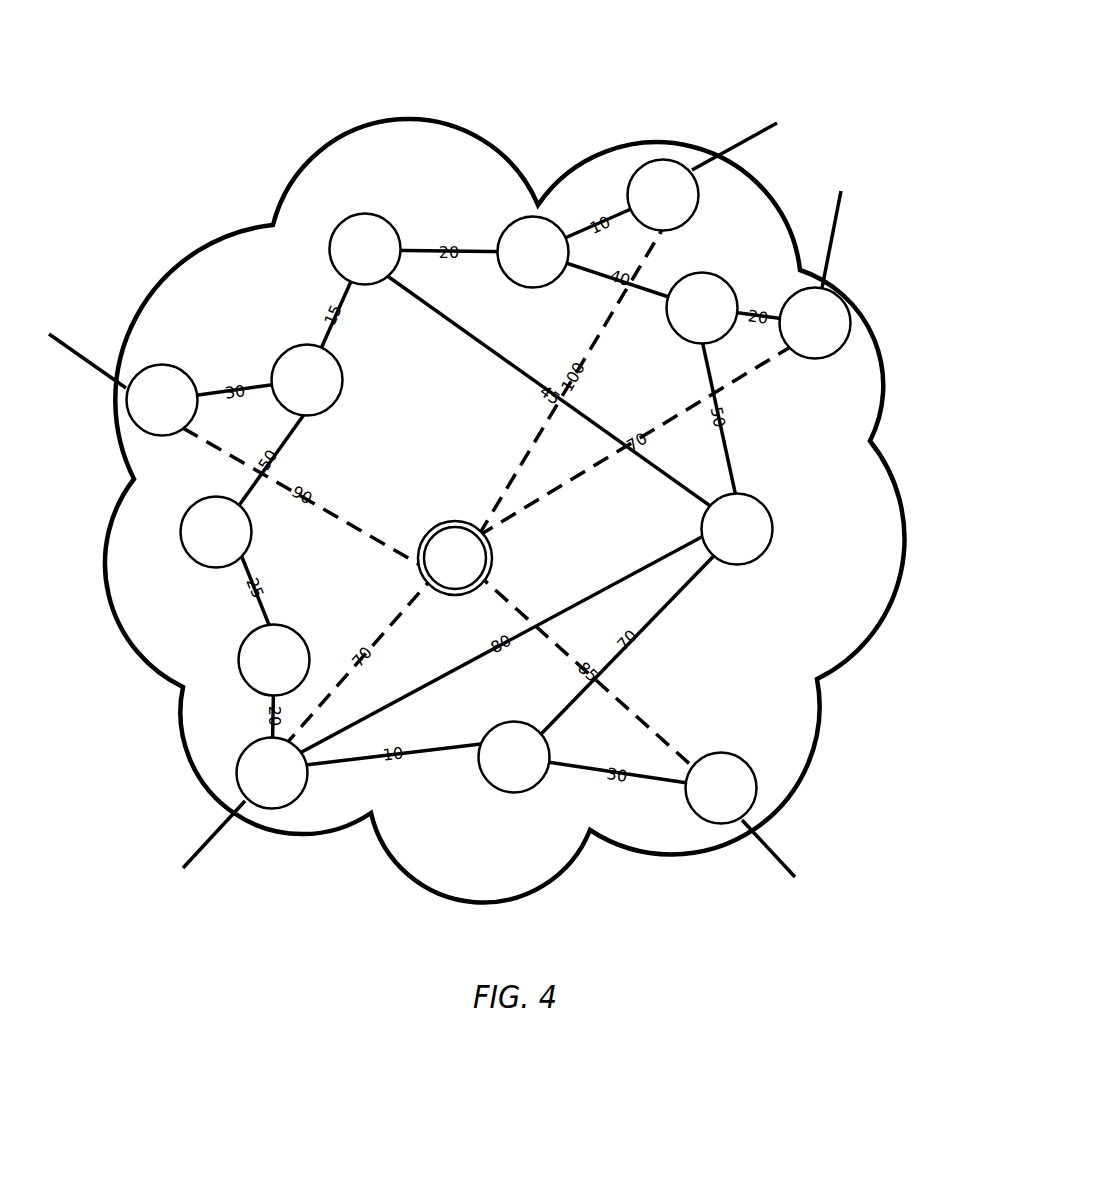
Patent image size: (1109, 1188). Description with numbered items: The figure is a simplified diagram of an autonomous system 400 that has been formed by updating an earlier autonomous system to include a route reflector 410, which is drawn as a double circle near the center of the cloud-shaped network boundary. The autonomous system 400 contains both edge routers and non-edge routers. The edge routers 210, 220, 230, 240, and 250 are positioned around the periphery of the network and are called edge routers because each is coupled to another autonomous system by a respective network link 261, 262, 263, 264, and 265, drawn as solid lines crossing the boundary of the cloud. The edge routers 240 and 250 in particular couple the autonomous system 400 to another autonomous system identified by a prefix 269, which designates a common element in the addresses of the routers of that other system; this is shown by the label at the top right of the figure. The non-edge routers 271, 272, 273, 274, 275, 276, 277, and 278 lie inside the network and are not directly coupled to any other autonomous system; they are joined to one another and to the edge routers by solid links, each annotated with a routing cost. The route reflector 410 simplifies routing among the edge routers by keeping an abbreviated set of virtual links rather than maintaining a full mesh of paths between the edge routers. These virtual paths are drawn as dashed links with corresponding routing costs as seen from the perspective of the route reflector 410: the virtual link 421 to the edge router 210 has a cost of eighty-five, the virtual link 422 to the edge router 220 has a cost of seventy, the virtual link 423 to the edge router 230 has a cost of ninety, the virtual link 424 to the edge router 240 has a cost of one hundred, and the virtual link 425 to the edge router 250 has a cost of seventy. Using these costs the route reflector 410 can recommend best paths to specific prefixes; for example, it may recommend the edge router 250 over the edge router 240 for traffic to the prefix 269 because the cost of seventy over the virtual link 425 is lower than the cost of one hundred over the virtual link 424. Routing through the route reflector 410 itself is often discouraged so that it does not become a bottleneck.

The autonomous system 400 is at (433, 118).
The route reflector 410 is at (455, 558).
The edge router 210 is at (721, 788).
The edge router 220 is at (272, 773).
The edge router 230 is at (162, 400).
The edge router 240 is at (663, 195).
The edge router 250 is at (815, 323).
The non-edge router 271 is at (514, 757).
The non-edge router 272 is at (274, 660).
The non-edge router 273 is at (216, 532).
The non-edge router 274 is at (307, 380).
The non-edge router 275 is at (365, 249).
The non-edge router 276 is at (533, 252).
The non-edge router 277 is at (702, 308).
The non-edge router 278 is at (737, 529).
The network link 261 is at (783, 868).
The network link 262 is at (208, 843).
The network link 263 is at (72, 345).
The network link 264 is at (745, 135).
The network link 265 is at (838, 234).
The prefix 269 is at (868, 138).
The virtual link 421 is at (642, 706).
The virtual link 422 is at (373, 645).
The virtual link 423 is at (340, 509).
The virtual link 424 is at (598, 340).
The virtual link 425 is at (752, 375).